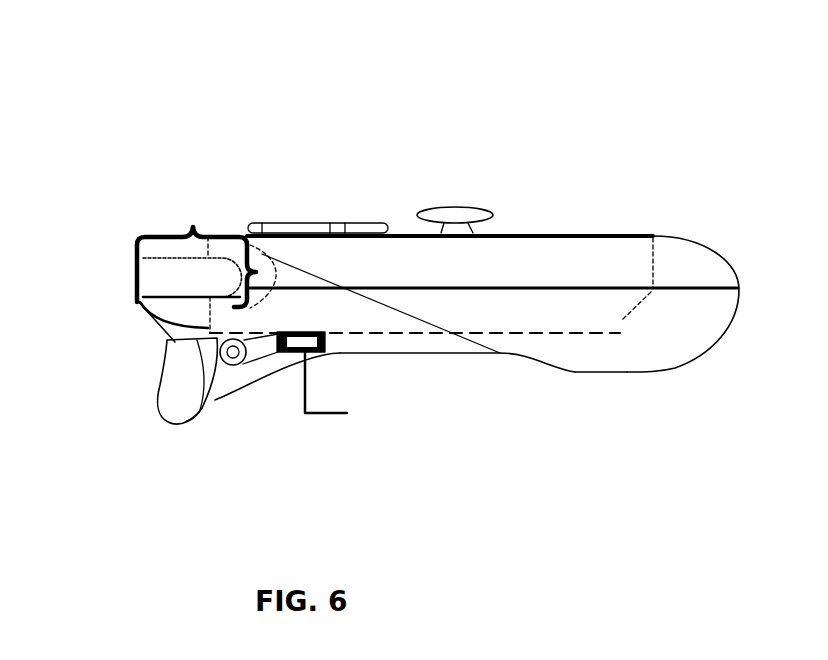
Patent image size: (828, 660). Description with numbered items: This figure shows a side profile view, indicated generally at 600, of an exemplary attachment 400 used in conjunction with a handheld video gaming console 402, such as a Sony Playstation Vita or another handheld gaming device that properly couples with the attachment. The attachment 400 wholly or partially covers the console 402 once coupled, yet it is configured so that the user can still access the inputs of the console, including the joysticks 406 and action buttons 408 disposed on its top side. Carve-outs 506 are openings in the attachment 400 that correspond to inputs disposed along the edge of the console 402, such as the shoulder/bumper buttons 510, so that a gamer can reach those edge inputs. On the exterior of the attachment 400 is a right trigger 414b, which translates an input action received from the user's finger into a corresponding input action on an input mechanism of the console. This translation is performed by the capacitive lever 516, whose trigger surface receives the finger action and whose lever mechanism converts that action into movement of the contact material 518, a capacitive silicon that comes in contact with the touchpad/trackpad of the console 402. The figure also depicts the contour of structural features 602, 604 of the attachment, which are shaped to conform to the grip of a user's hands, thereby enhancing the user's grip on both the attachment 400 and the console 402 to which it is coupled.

The handheld controller assembly 600 is at (401, 33).
The attachment 400 is at (680, 246).
The handheld video gaming console 402 is at (163, 256).
The joysticks 406 is at (448, 208).
The action buttons 408 is at (309, 228).
The right trigger 414b is at (182, 387).
The carve-outs 506 is at (227, 243).
The shoulder/bumper buttons 510 is at (152, 280).
The capacitive lever 516 is at (236, 379).
The material 518 is at (338, 377).
The structural feature 602 is at (628, 372).
The structural feature 604 is at (258, 392).